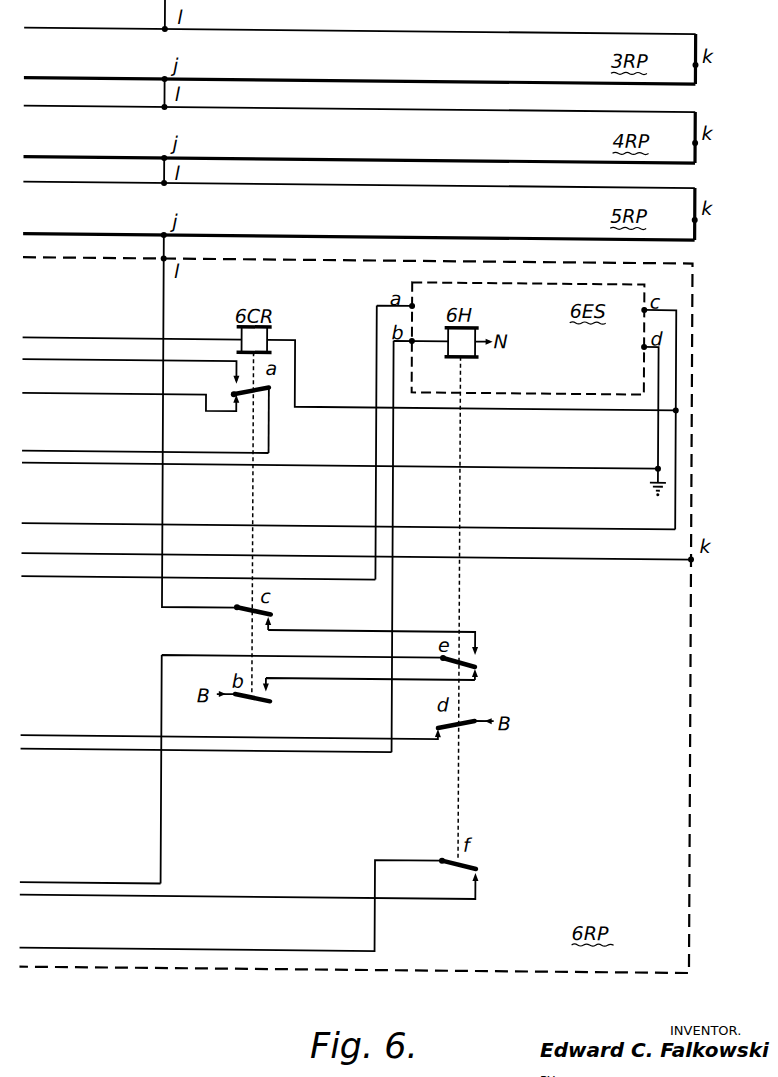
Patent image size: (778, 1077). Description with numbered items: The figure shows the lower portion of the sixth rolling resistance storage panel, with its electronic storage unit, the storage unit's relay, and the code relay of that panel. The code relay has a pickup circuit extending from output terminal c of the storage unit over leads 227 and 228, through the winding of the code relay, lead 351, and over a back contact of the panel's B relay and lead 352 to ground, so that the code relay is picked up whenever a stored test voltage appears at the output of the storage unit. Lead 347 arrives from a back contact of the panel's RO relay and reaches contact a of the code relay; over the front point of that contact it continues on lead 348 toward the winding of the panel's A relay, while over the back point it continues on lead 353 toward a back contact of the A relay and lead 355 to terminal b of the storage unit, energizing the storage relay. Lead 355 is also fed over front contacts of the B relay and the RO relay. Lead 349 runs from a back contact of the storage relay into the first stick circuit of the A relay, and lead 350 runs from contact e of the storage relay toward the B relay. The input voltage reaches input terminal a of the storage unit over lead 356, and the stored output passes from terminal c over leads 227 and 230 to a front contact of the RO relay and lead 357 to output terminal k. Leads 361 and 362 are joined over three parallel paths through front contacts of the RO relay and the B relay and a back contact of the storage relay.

The lead 351 is at (64, 336).
The lead 348 is at (64, 358).
The lead 353 is at (64, 392).
The lead 347 is at (64, 450).
The lead 352 is at (69, 466).
The lead 230 is at (64, 522).
The lead 357 is at (64, 552).
The lead 356 is at (64, 575).
The lead 349 is at (64, 734).
The lead 355 is at (69, 752).
The lead 350 is at (64, 881).
The lead 362 is at (69, 898).
The lead 361 is at (64, 947).
The lead 227 is at (688, 295).
The lead 228 is at (568, 421).